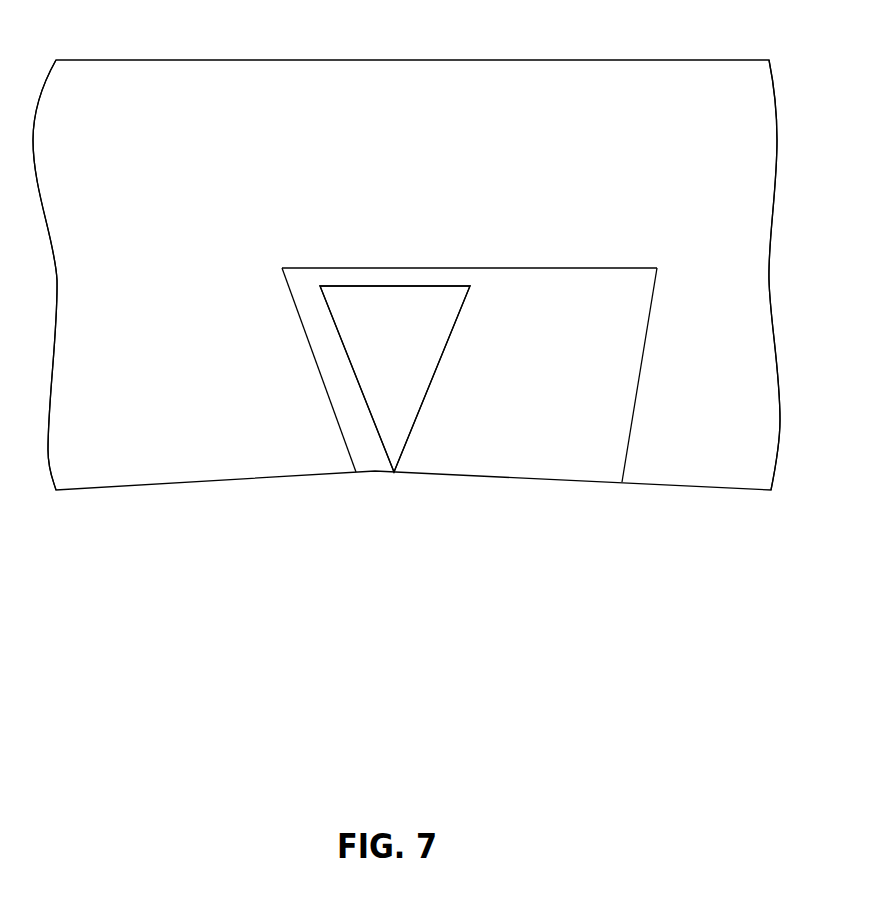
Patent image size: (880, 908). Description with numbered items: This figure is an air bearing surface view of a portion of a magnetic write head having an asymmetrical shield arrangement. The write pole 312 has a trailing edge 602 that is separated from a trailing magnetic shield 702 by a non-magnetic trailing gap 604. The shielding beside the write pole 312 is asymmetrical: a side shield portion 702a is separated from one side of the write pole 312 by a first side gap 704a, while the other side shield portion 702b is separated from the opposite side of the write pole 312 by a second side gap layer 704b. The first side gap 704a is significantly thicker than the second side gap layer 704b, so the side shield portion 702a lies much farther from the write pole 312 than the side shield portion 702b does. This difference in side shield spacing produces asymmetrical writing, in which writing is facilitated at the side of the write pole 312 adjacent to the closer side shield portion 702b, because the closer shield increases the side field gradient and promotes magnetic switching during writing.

The trailing magnetic shield 702 is at (476, 156).
The side shield portion 702a is at (750, 386).
The side shield portion 702b is at (177, 362).
The first side gap 704a is at (565, 382).
The second side gap layer 704b is at (329, 362).
The trailing edge 602 is at (384, 286).
The non-magnetic trailing gap 604 is at (417, 272).
The write pole 312 is at (426, 316).